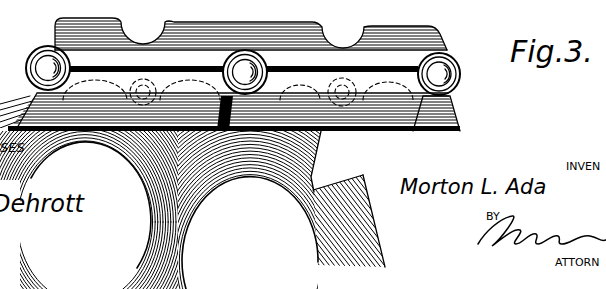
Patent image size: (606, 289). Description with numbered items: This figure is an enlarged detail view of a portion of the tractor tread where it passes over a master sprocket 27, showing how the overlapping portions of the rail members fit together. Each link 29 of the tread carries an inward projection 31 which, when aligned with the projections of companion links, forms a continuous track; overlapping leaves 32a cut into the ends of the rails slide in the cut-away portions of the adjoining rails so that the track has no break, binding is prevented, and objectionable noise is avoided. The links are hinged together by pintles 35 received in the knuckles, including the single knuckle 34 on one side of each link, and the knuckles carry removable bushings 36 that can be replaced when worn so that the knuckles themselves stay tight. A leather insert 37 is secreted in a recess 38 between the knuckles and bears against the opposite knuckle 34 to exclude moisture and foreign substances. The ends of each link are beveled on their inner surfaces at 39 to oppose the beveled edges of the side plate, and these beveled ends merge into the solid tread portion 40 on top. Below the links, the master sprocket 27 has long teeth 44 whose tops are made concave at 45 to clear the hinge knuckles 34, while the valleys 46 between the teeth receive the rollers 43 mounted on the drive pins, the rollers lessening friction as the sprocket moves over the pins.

The master sprocket 27 is at (318, 247).
The link 29 is at (250, 25).
The inward projection 31 is at (150, 151).
The overlapping leaf 32a is at (462, 114).
The knuckle 34 is at (461, 80).
The pintle 35 is at (38, 63).
The bushing 36 is at (449, 63).
The leather insert 37 is at (70, 61).
The recess or pocket 38 is at (251, 54).
The beveled surface 39 is at (200, 52).
The tread portion 40 is at (178, 40).
The roller 43 is at (72, 170).
The tooth 44 is at (360, 178).
The concavity 45 is at (374, 247).
The valley 46 is at (300, 185).